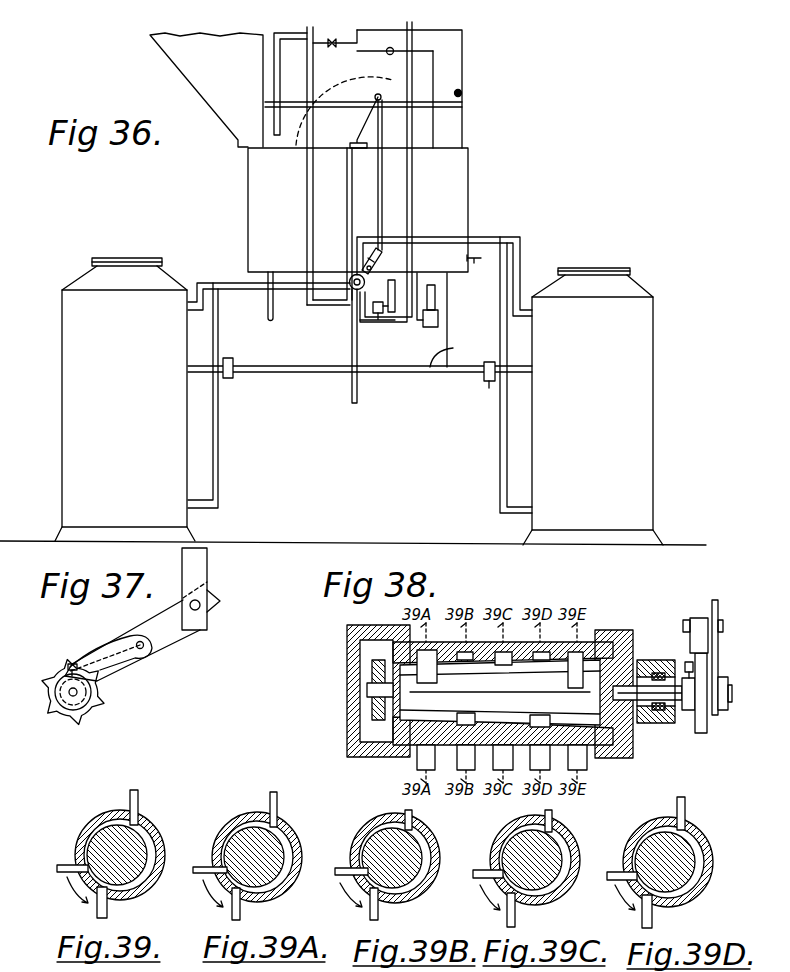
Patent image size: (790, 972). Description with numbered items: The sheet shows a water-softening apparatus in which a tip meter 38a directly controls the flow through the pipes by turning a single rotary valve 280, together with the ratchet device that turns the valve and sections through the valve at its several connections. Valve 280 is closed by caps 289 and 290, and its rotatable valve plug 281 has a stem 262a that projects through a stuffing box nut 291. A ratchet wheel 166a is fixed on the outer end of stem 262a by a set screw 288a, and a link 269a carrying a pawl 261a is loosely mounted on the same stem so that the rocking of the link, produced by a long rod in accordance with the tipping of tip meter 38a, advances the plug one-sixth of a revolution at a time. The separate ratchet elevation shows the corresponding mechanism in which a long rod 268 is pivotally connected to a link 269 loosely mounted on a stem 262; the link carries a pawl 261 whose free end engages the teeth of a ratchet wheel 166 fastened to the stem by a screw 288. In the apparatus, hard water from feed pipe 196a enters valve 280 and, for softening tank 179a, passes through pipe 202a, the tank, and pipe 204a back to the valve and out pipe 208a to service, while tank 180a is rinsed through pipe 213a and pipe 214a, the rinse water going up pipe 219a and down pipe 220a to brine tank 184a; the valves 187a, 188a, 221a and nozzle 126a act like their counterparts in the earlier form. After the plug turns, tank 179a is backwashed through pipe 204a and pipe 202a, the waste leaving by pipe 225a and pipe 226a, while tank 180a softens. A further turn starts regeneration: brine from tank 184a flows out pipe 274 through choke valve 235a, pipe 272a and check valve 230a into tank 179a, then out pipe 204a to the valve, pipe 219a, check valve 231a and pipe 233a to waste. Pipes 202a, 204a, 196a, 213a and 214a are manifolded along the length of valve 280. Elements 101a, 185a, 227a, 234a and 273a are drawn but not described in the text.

In FIG. 36, the tip meter 38a is at (322, 133).
In FIG. 36, the hopper 101a is at (238, 142).
In FIG. 36, the nozzle 126a is at (354, 70).
In FIG. 37, the ratchet wheel 166 is at (95, 710).
In FIG. 38, the ratchet wheel 166a is at (700, 722).
In FIG. 36, the tank 179a is at (83, 284).
In FIG. 36, the tank 180a is at (636, 294).
In FIG. 36, the brine tank 184a is at (468, 178).
In FIG. 36, the outlet fitting 185a is at (480, 260).
In FIG. 36, the valve 187a is at (462, 58).
In FIG. 36, the valve 188a is at (461, 95).
In FIG. 36, the feed pipe 196a is at (352, 350).
In FIG. 39, the feed pipe 196a is at (107, 915).
In FIG. 39C, the feed pipe 196a is at (515, 924).
In FIG. 36, the pipe 202a is at (241, 283).
In FIG. 38, the pipe 202a is at (424, 742).
In FIG. 39, the pipe 202a is at (57, 868).
In FIG. 39A, the pipe 202a is at (205, 867).
In FIG. 36, the pipe 204a is at (218, 457).
In FIG. 38, the pipe 204a is at (522, 742).
In FIG. 39A, the pipe 204a is at (297, 862).
In FIG. 39B, the pipe 204a is at (342, 868).
In FIG. 39C, the pipe 204a is at (480, 870).
In FIG. 39D, the pipe 204a is at (617, 872).
In FIG. 36, the pipe 208a is at (357, 398).
In FIG. 39B, the pipe 208a is at (378, 920).
In FIG. 36, the pipe 213a is at (520, 250).
In FIG. 39, the pipe 213a is at (138, 805).
In FIG. 39A, the pipe 213a is at (277, 807).
In FIG. 36, the pipe 214a is at (500, 458).
In FIG. 39B, the pipe 214a is at (415, 813).
In FIG. 39C, the pipe 214a is at (553, 813).
In FIG. 39D, the pipe 214a is at (686, 814).
In FIG. 36, the pipe 219a is at (412, 207).
In FIG. 39D, the pipe 219a is at (652, 920).
In FIG. 36, the pipe 220a is at (434, 88).
In FIG. 36, the valve 221a is at (395, 62).
In FIG. 36, the pipe 225a is at (307, 216).
In FIG. 39A, the pipe 225a is at (240, 917).
In FIG. 36, the pipe 226a is at (277, 77).
In FIG. 36, the valve 227a is at (335, 35).
In FIG. 36, the check valve 230a is at (233, 380).
In FIG. 36, the check valve 231a is at (405, 338).
In FIG. 36, the pipe 233a is at (410, 330).
In FIG. 36, the pipe 234a is at (268, 318).
In FIG. 36, the choke valve 235a is at (438, 328).
In FIG. 37, the pawl 261 is at (103, 643).
In FIG. 38, the pawl 261a is at (700, 618).
In FIG. 37, the stem 262 is at (69, 693).
In FIG. 38, the stem 262a is at (732, 695).
In FIG. 36, the long rod 268 is at (378, 190).
In FIG. 37, the long rod 268 is at (208, 620).
In FIG. 36, the link 269 is at (361, 252).
In FIG. 37, the link 269 is at (120, 668).
In FIG. 38, the link 269a is at (713, 602).
In FIG. 36, the pipe 272a is at (461, 354).
In FIG. 36, the valve 273a is at (488, 384).
In FIG. 36, the pipe 274 is at (418, 274).
In FIG. 36, the valve 280 is at (352, 278).
In FIG. 38, the valve 280 is at (660, 815).
In FIG. 39, the valve 280 is at (110, 814).
In FIG. 38, the valve plug 281 is at (590, 668).
In FIG. 39, the valve plug 281 is at (100, 842).
In FIG. 39D, the valve plug 281 is at (690, 880).
In FIG. 37, the screw 288 is at (67, 668).
In FIG. 38, the set screw 288a is at (688, 662).
In FIG. 38, the cap 289 is at (347, 722).
In FIG. 38, the cap 290 is at (632, 630).
In FIG. 38, the stuffing box nut 291 is at (665, 723).